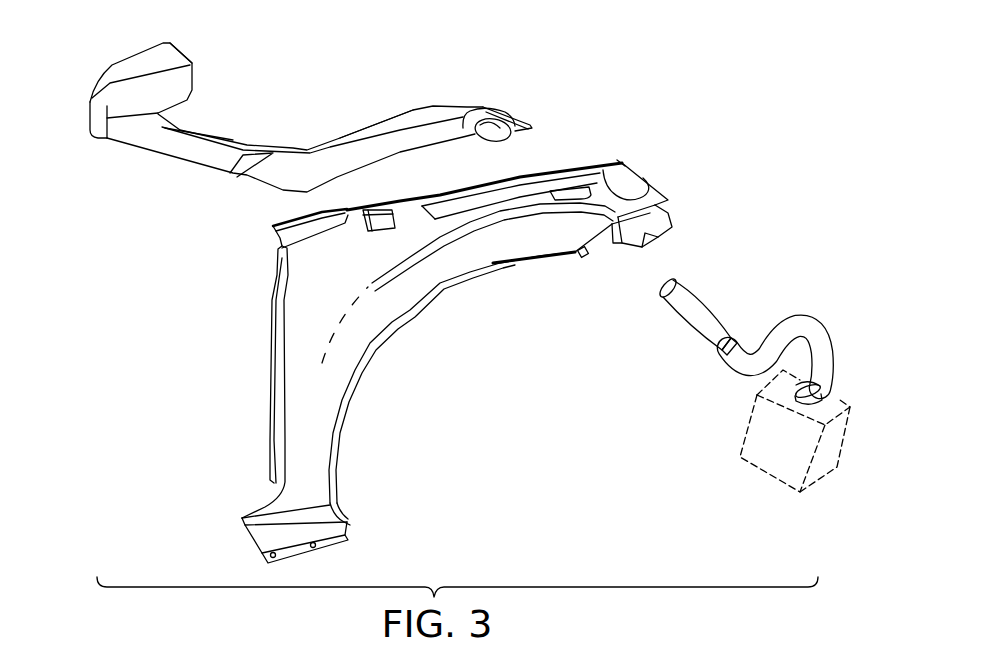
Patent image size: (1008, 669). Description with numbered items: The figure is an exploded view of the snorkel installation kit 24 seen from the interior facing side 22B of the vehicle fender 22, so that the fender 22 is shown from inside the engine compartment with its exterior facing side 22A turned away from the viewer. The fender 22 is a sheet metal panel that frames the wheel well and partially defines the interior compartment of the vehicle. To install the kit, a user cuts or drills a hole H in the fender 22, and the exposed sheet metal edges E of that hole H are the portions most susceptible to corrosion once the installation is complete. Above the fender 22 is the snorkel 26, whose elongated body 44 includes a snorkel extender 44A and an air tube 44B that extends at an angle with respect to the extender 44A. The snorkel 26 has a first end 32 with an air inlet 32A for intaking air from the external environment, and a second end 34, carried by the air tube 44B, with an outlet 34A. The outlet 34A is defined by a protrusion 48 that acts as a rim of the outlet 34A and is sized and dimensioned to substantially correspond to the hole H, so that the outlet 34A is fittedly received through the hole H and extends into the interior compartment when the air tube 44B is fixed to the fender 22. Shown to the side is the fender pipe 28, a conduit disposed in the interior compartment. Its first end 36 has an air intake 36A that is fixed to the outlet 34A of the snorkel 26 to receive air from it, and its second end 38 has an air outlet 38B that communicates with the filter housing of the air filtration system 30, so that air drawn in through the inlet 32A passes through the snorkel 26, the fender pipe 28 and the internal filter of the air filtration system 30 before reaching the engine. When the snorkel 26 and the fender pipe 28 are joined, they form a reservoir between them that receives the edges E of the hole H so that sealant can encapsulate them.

The vehicle fender 22 is at (413, 352).
The exterior facing side 22A is at (273, 282).
The interior facing side 22B is at (390, 292).
The snorkel installation kit 24 is at (373, 281).
The snorkel 26 is at (319, 96).
The fender pipe 28 is at (741, 343).
The air filtration system 30 is at (779, 431).
The first end 32 is at (142, 69).
The air inlet 32A is at (187, 67).
The second end 34 is at (517, 106).
The outlet 34A is at (512, 135).
The first end 36 is at (717, 319).
The air intake 36A is at (663, 287).
The second end 38 is at (779, 402).
The air outlet 38B is at (795, 405).
The elongated body 44 is at (295, 116).
The snorkel extender 44A is at (213, 127).
The air tube 44B is at (437, 106).
The protrusion 48 is at (470, 112).
The edges E is at (563, 200).
The hole H is at (632, 179).